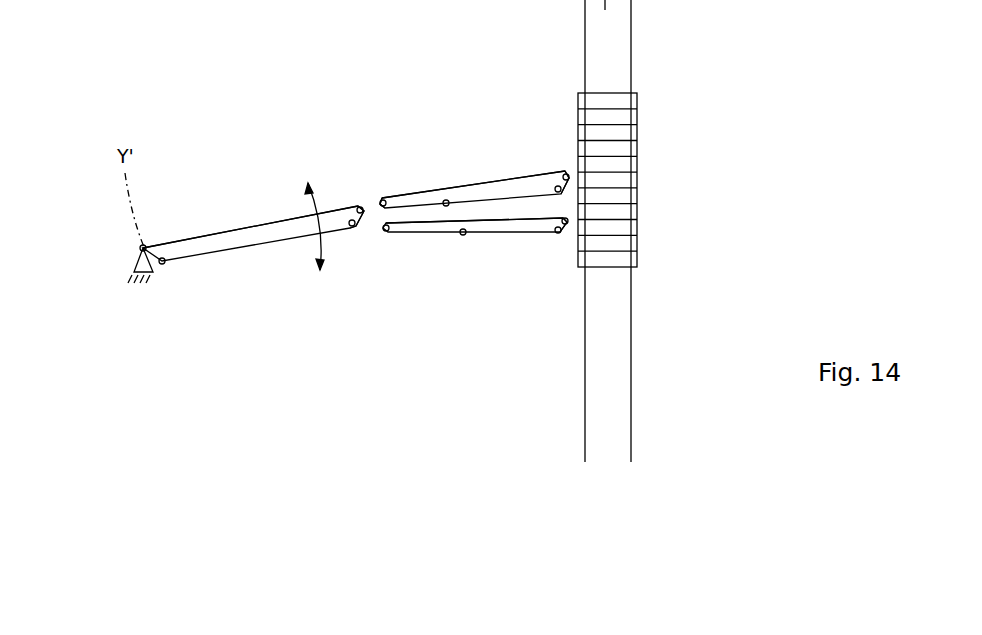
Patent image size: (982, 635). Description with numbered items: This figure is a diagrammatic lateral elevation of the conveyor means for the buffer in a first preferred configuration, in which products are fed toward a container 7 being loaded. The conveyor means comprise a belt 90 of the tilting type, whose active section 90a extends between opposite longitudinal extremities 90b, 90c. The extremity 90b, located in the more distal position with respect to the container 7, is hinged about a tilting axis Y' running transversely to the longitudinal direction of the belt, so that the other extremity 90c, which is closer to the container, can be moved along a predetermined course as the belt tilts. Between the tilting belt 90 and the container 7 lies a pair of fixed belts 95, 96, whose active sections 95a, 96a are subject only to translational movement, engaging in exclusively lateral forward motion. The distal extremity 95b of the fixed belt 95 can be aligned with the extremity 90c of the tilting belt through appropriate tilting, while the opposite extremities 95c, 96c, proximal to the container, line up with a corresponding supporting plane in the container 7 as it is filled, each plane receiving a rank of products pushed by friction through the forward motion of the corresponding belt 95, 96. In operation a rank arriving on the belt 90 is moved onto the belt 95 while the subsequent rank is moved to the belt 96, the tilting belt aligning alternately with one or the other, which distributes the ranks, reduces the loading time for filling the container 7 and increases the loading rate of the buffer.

The container 7 is at (637, 115).
The tilting belt 90 is at (239, 247).
The active section of the tilting belt 90a is at (231, 231).
The distal extremity of the tilting belt 90b is at (143, 248).
The proximal extremity of the tilting belt 90c is at (360, 207).
The fixed belt 95 is at (507, 180).
The active section of fixed belt 95 95a is at (460, 188).
The distal extremity of fixed belt 95 95b is at (381, 198).
The proximal extremity of fixed belt 95 95c is at (568, 175).
The fixed belt 96 is at (384, 227).
The active section of fixed belt 96 96a is at (501, 221).
The proximal extremity of fixed belt 96 96c is at (567, 224).